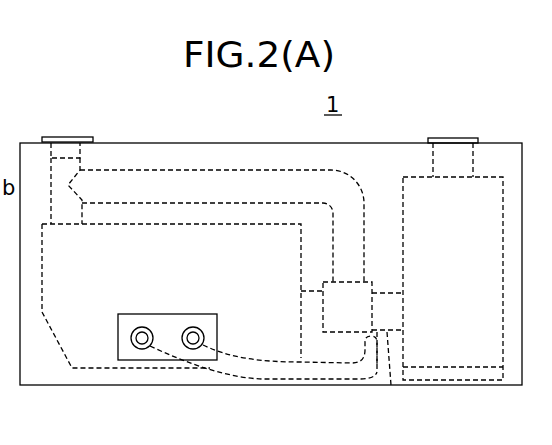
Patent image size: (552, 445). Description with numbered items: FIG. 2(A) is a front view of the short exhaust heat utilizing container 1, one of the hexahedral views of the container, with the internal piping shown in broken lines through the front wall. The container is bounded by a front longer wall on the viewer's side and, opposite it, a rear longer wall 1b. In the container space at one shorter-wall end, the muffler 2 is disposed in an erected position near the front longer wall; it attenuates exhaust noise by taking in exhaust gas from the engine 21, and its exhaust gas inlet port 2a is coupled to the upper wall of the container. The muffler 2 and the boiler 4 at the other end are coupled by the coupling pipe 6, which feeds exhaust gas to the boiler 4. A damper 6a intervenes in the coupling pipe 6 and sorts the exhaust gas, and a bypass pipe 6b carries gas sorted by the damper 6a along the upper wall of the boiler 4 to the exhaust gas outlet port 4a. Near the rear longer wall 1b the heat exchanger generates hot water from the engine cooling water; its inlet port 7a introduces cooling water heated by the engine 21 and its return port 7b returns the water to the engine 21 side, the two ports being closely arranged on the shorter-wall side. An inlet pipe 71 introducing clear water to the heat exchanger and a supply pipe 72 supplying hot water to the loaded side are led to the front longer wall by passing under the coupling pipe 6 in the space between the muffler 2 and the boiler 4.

The exhaust heat utilizing container 1 is at (57, 165).
The rear longer wall 1b is at (394, 178).
The muffler 2 is at (456, 367).
The exhaust gas inlet port 2a is at (448, 141).
The engine 21 is at (468, 162).
The boiler 4 is at (133, 255).
The exhaust gas outlet port 4a is at (60, 135).
The coupling pipe 6 is at (391, 385).
The damper 6a is at (362, 282).
The bypass pipe 6b is at (222, 168).
The inlet port 7a is at (199, 349).
The return port 7b is at (136, 349).
The inlet pipe 71 is at (283, 364).
The supply pipe 72 is at (181, 360).